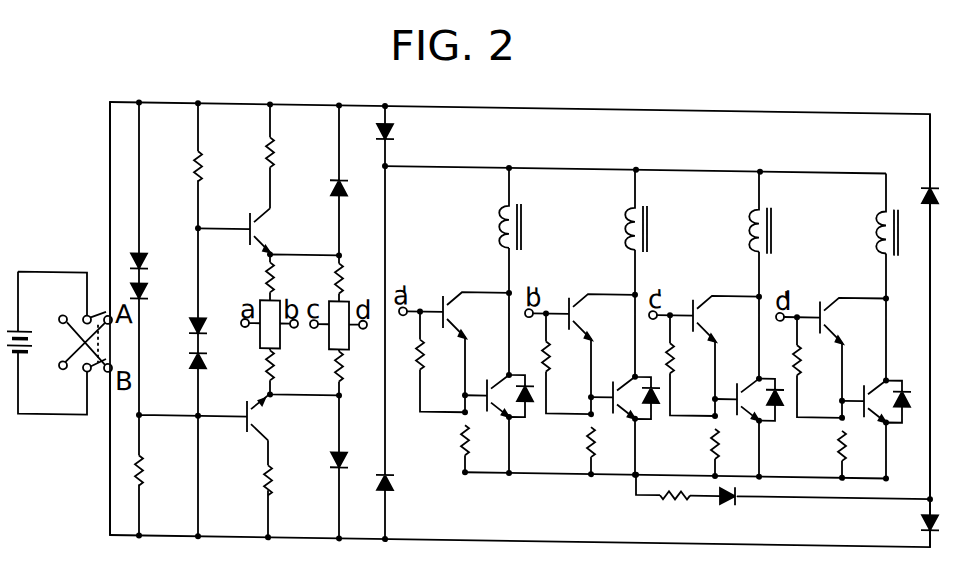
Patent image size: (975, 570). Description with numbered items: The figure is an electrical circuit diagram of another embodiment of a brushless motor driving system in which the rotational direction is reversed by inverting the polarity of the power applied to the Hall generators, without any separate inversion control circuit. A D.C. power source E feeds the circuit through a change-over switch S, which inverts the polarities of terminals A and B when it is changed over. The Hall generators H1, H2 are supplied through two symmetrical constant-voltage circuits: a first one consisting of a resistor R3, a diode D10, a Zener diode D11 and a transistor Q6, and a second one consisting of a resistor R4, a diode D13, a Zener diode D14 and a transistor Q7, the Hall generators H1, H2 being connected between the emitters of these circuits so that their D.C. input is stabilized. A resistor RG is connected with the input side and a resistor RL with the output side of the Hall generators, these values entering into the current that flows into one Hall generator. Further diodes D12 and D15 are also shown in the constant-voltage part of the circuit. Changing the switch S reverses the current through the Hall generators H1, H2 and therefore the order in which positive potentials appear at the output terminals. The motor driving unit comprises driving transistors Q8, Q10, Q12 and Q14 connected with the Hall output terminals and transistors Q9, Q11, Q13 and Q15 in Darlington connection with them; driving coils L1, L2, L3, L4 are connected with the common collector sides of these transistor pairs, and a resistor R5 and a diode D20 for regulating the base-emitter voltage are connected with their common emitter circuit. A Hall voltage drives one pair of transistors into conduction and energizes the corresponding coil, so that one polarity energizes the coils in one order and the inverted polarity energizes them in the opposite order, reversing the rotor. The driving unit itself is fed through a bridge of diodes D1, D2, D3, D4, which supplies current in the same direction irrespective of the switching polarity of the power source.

The D.C. power source E is at (35, 335).
The change-over switch S is at (74, 366).
The diode D1 is at (396, 129).
The diode D2 is at (393, 475).
The diode D3 is at (927, 194).
The diode D4 is at (919, 515).
The diode D10 is at (208, 313).
The Zener diode D11 is at (188, 358).
The diode D12 is at (329, 465).
The diode D13 is at (146, 290).
The Zener diode D14 is at (151, 250).
The diode D15 is at (330, 185).
The diode D20 is at (732, 494).
The resistor R3 is at (206, 157).
The resistor R4 is at (147, 468).
The resistor R5 is at (677, 494).
The resistor connected with input side of Hall generator RG is at (263, 273).
The resistor connected with output side of Hall generator RL is at (262, 366).
The Hall generator H1 is at (282, 295).
The Hall generator H2 is at (347, 295).
The driving coil L1 is at (517, 191).
The driving coil L2 is at (643, 192).
The driving coil L3 is at (775, 193).
The driving coil L4 is at (895, 193).
The transistor Q6 is at (258, 224).
The transistor Q7 is at (258, 414).
The driving transistor Q8 is at (447, 290).
The transistor Q9 is at (493, 369).
The driving transistor Q10 is at (573, 290).
The transistor Q11 is at (619, 369).
The driving transistor Q12 is at (697, 290).
The transistor Q13 is at (743, 369).
The driving transistor Q14 is at (824, 290).
The transistor Q15 is at (870, 369).